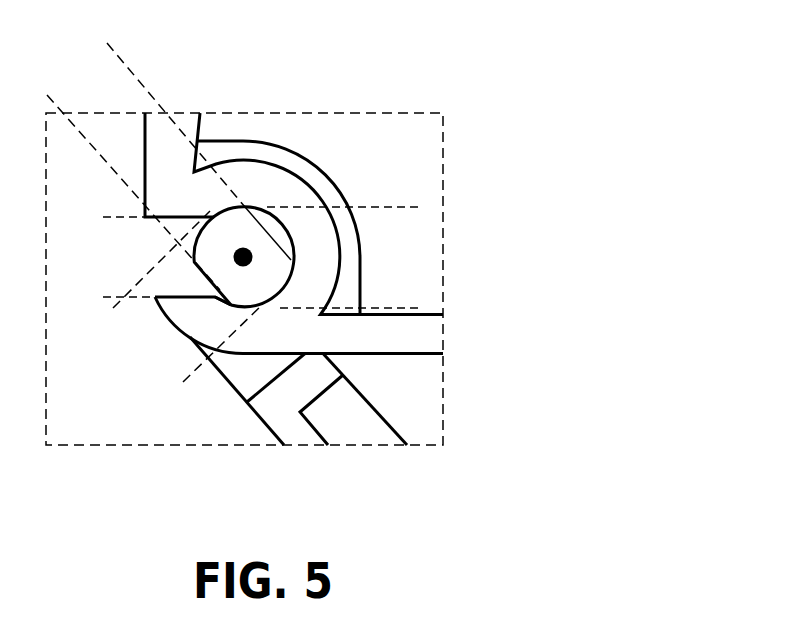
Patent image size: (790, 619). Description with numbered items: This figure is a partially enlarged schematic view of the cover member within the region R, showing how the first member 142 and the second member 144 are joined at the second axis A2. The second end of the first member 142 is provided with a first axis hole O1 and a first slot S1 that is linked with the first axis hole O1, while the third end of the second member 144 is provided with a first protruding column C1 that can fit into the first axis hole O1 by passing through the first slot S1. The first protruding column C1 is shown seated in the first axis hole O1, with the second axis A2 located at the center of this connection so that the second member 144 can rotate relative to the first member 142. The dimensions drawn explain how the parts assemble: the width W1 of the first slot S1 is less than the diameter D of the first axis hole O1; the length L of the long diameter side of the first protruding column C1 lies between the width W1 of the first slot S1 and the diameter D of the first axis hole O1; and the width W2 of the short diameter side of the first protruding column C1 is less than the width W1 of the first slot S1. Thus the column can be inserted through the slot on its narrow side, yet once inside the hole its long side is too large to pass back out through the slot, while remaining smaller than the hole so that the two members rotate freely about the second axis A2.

The first member 142 is at (192, 120).
The second member 144 is at (353, 428).
The second axis A2 is at (253, 248).
The first protruding column C1 is at (275, 258).
The first slot S1 is at (163, 240).
The region R is at (447, 223).
The width of the first slot W1 is at (113, 217).
The width of the short diameter side of the first protruding column W2 is at (105, 42).
The length of the long diameter side of the first protruding column L is at (112, 308).
The diameter of the first axis hole D is at (407, 207).
The first axis hole O1 is at (248, 309).